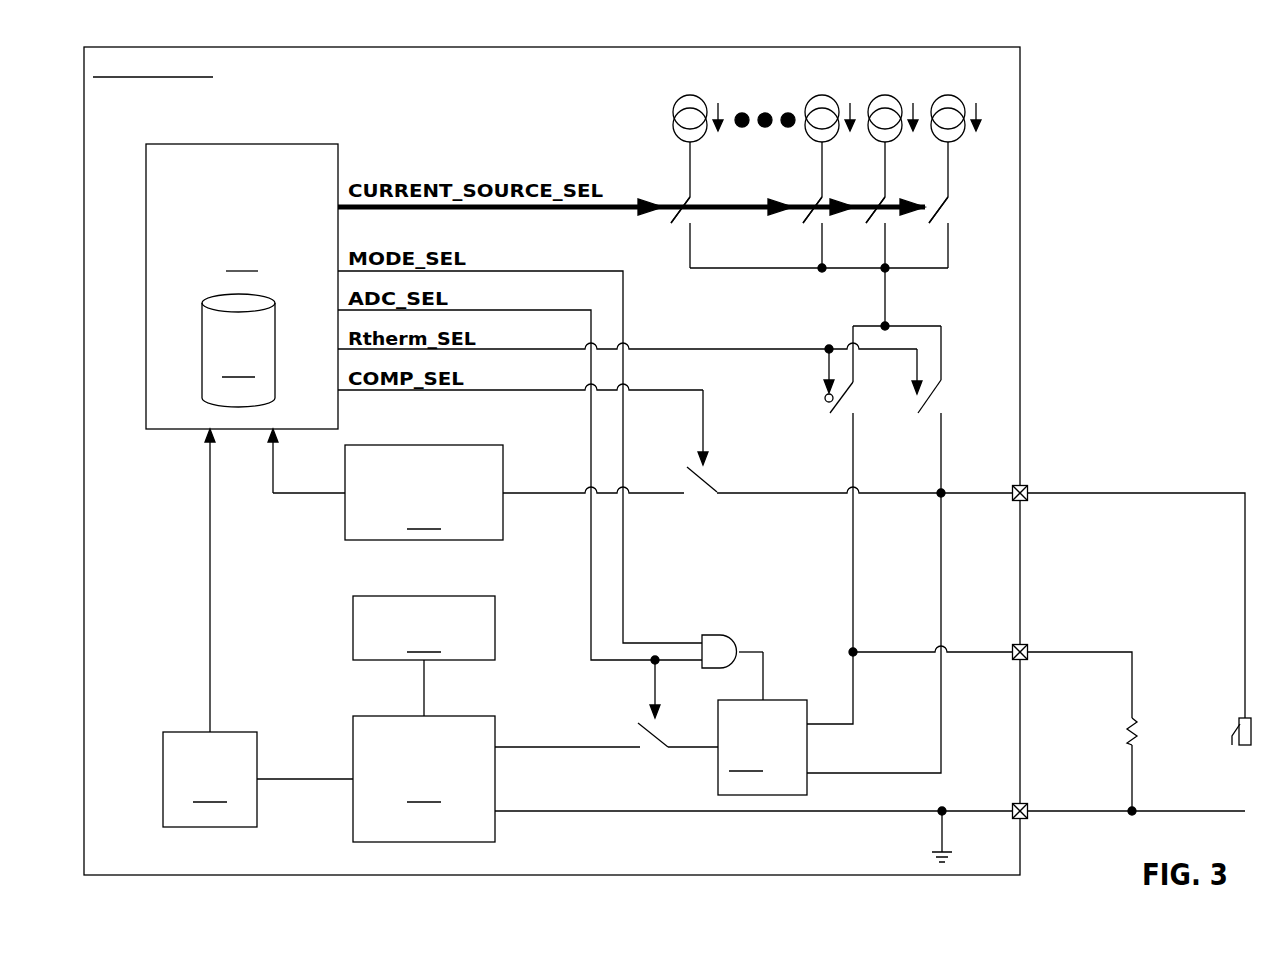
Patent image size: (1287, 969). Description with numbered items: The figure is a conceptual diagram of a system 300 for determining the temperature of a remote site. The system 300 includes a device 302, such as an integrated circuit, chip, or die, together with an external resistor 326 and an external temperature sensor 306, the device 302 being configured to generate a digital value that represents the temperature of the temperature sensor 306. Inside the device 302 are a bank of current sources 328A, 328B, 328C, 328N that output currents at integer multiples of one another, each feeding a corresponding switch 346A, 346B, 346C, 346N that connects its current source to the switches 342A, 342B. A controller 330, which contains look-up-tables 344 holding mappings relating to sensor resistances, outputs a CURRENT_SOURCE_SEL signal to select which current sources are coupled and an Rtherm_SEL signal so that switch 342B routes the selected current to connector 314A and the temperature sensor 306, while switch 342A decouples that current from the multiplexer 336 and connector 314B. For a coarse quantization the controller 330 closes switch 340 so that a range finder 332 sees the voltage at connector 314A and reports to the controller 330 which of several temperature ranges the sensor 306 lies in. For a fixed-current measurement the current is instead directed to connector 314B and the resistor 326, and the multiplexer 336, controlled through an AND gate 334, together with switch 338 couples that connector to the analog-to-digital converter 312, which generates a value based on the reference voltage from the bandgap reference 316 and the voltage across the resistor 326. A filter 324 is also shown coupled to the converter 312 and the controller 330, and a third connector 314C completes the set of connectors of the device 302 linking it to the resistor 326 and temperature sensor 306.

The system 300 is at (1120, 121).
The device 302 is at (552, 461).
The temperature sensor 306 is at (1236, 724).
The analog-to-digital converter 312 is at (424, 779).
The connector 314A is at (1030, 487).
The connector 314B is at (1030, 647).
The connector 314C is at (1030, 806).
The bandgap reference 316 is at (424, 628).
The filter 324 is at (210, 779).
The resistor 326 is at (1124, 724).
The current source 328A is at (934, 97).
The current source 328B is at (871, 97).
The current source 328C is at (808, 97).
The current source 328N is at (676, 97).
The controller 330 is at (242, 286).
The range finder 332 is at (424, 492).
The AND gate 334 is at (713, 634).
The multiplexer 336 is at (762, 747).
The switch 338 is at (661, 748).
The switch 340 is at (707, 494).
The switch 342A is at (851, 388).
The switch 342B is at (939, 388).
The look-up-tables 344 is at (238, 350).
The switch 346A is at (931, 200).
The switch 346B is at (867, 200).
The switch 346C is at (802, 200).
The switch 346N is at (672, 200).